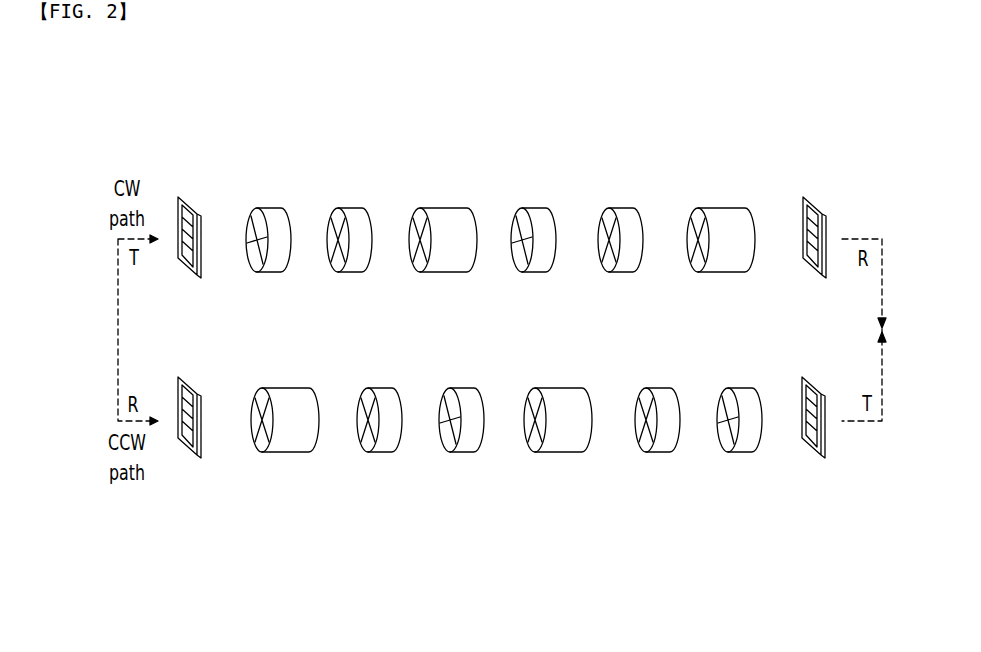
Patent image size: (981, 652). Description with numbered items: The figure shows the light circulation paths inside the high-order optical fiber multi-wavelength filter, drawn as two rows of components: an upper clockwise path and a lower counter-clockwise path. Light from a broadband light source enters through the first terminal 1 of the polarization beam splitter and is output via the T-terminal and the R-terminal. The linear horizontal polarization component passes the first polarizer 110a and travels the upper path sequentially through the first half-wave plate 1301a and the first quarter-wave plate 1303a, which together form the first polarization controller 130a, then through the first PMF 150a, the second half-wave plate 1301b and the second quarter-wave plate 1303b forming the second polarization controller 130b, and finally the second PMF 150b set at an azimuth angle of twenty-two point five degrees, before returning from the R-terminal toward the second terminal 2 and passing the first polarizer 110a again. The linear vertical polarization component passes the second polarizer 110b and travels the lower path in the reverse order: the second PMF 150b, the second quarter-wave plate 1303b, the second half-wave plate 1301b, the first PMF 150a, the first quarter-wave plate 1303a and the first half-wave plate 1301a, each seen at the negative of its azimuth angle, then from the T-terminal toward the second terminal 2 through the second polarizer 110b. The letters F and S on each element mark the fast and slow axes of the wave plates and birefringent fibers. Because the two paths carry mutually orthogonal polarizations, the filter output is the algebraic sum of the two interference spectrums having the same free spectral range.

The first terminal 1 is at (117, 330).
The second terminal 2 is at (892, 330).
The first polarizer 110a is at (493, 208).
The second polarizer 110b is at (509, 447).
The first polarization controller 130a is at (502, 333).
The second polarization controller 130b is at (498, 333).
The first half-wave plate 1301a is at (502, 330).
The first quarter-wave plate 1303a is at (501, 330).
The second half-wave plate 1301b is at (496, 330).
The second quarter-wave plate 1303b is at (512, 152).
The first PMF 150a is at (495, 330).
The second PMF 150b is at (498, 330).